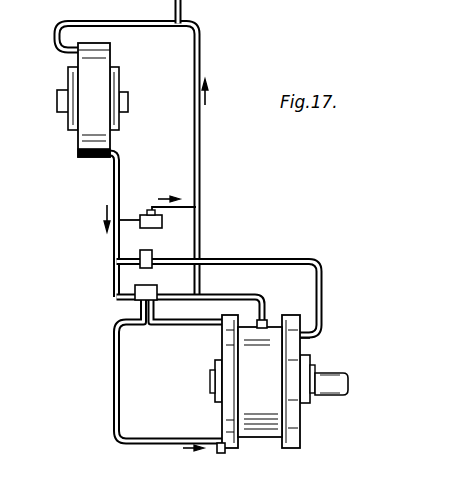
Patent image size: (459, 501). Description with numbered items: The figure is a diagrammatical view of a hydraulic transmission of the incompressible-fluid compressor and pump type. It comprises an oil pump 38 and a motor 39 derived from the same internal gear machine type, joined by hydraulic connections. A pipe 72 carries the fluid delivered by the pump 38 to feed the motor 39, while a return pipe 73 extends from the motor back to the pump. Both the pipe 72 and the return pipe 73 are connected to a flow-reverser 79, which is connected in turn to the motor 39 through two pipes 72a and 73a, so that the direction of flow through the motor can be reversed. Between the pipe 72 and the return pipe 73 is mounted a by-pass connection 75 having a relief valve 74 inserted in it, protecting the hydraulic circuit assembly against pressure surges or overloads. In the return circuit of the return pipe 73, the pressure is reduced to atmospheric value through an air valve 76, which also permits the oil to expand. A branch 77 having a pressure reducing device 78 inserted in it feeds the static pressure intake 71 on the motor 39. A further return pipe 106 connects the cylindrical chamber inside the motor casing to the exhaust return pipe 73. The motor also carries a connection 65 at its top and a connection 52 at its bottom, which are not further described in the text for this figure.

The oil pump 38 is at (112, 136).
The motor 39 is at (267, 350).
The drain connection 52 is at (219, 450).
The inlet connection 65 is at (237, 299).
The static pressure intake 71 is at (302, 343).
The pipe 72 is at (114, 246).
The pipe 72a is at (117, 385).
The return pipe 73 is at (201, 180).
The pipe 73a is at (188, 327).
The relief valve 74 is at (152, 224).
The by-pass connection 75 is at (127, 217).
The air valve 76 is at (181, 13).
The branch 77 is at (311, 263).
The pressure reducing device 78 is at (145, 270).
The flow-reverser 79 is at (136, 299).
The return pipe 106 is at (224, 300).